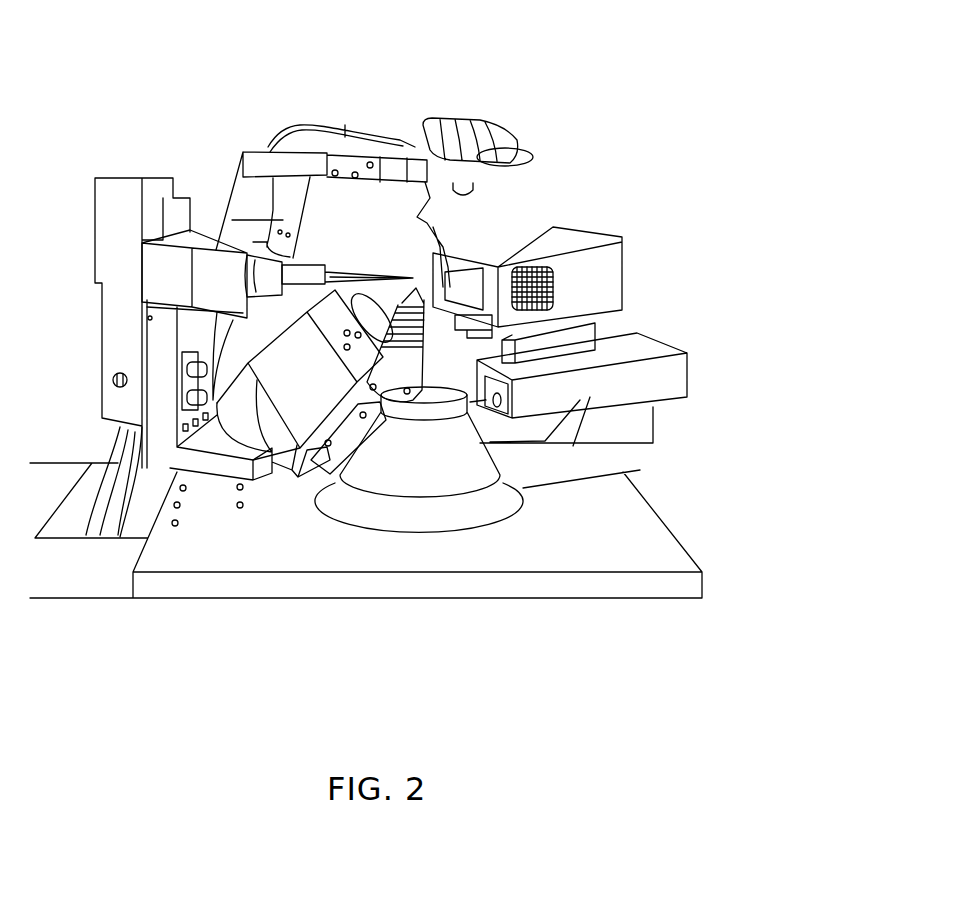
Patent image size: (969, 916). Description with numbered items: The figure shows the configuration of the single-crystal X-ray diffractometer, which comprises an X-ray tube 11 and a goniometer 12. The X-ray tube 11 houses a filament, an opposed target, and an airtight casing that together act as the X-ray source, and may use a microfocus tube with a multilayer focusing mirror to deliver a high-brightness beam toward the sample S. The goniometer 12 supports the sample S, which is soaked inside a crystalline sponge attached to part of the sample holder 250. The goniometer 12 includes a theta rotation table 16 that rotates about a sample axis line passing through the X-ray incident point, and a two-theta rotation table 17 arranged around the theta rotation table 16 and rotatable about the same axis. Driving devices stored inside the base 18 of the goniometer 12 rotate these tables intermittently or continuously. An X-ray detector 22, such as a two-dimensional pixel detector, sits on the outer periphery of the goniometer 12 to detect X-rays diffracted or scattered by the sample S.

The X-ray tube 11 is at (188, 237).
The sample holder 250 is at (420, 292).
The X-ray detector 22 is at (578, 282).
The θ rotation table 16 is at (457, 463).
The 2θ rotation table 17 is at (463, 512).
The base 18 is at (537, 588).
The goniometer 12 is at (832, 430).
The sample S is at (352, 266).